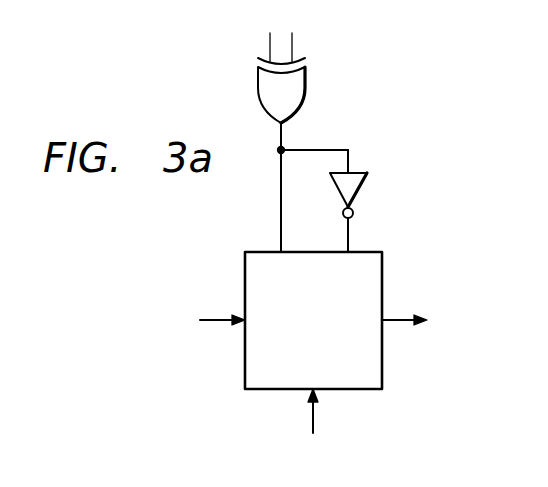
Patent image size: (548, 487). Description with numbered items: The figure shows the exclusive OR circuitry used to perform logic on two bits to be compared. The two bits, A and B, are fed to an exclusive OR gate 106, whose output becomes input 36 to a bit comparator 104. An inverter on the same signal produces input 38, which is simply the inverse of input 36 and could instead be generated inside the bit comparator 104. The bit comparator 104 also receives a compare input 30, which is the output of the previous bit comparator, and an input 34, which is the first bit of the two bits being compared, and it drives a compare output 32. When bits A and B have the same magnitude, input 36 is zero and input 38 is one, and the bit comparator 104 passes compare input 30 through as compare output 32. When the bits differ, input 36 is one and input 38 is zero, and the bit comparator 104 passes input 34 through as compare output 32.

The exclusive OR gate 106 is at (258, 88).
The input 36 is at (278, 248).
The input 38 is at (345, 248).
The bit comparator 104 is at (382, 381).
The compare input 30 is at (231, 318).
The compare output 32 is at (386, 318).
The input 34 is at (310, 410).